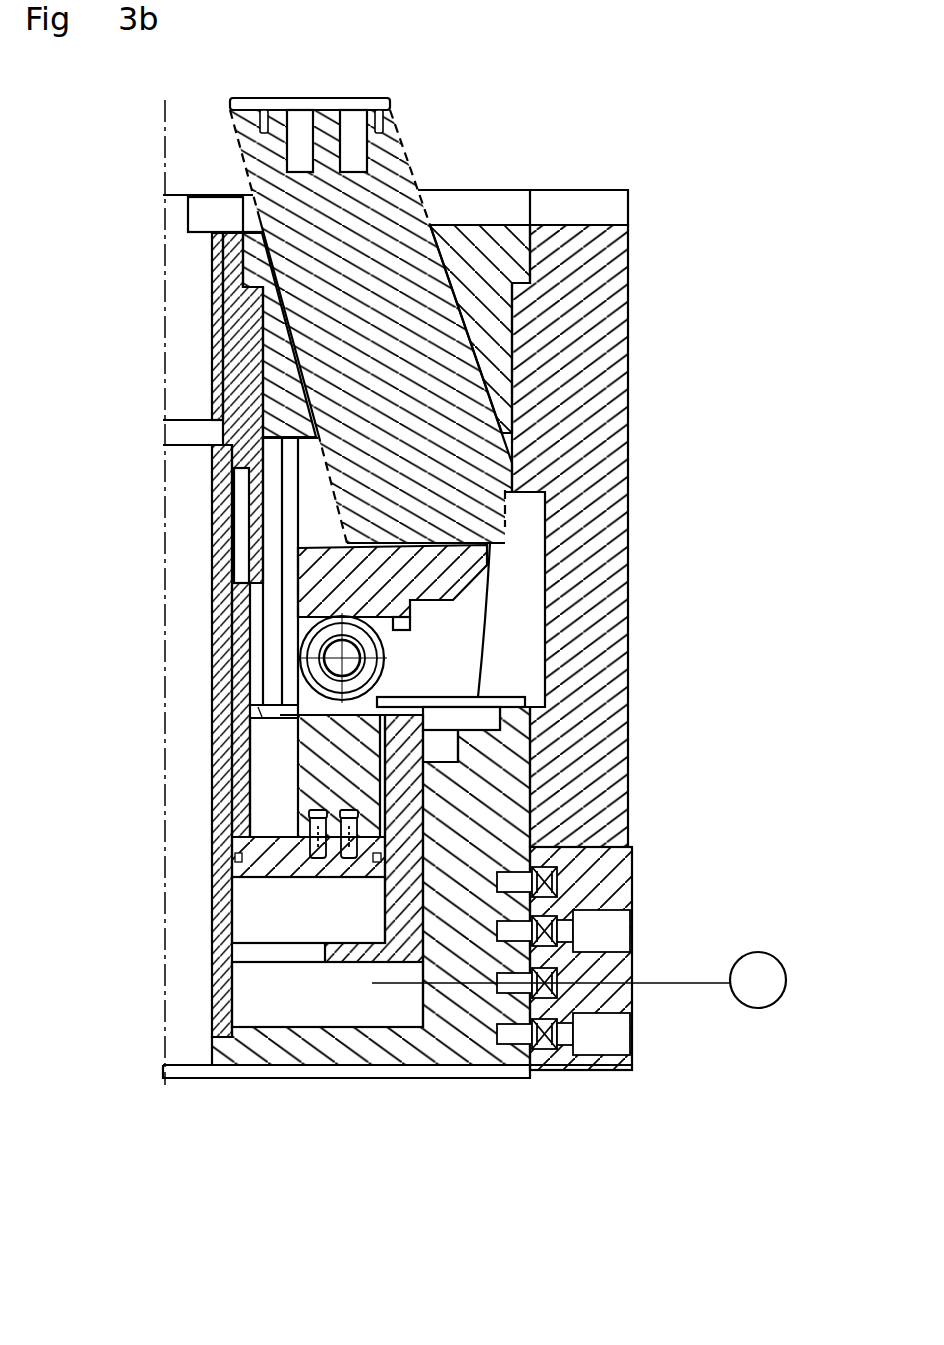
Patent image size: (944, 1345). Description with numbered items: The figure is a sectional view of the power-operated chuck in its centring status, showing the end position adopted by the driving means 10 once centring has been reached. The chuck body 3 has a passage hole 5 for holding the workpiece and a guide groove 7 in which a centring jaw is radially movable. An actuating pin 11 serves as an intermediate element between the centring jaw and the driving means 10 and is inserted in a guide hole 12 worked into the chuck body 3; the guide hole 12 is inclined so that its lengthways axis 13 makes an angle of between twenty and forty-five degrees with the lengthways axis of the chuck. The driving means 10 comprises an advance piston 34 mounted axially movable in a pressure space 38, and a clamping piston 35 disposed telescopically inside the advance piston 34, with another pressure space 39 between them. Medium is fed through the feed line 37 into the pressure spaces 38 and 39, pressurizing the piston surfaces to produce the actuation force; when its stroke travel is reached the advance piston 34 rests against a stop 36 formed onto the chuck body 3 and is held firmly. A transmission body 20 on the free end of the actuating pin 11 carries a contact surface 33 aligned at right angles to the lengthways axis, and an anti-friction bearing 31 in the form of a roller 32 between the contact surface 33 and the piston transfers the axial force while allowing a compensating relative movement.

The chuck body 3 is at (500, 1077).
The passage hole 5 is at (210, 985).
The guide groove 7 is at (497, 203).
The driving means 10 is at (255, 878).
The actuating pin 11 is at (440, 480).
The guide hole 12 is at (455, 330).
The lengthways axis of the guide hole 13 is at (400, 378).
The transmission body 20 is at (413, 583).
The anti-friction bearing 31 is at (453, 733).
The roller 32 is at (375, 672).
The contact surface 33 is at (408, 618).
The advance piston 34 is at (350, 953).
The clamping piston 35 is at (250, 847).
The stop 36 is at (233, 708).
The feed line 37 is at (763, 1007).
The pressure space 38 is at (300, 998).
The pressure space 39 is at (298, 915).